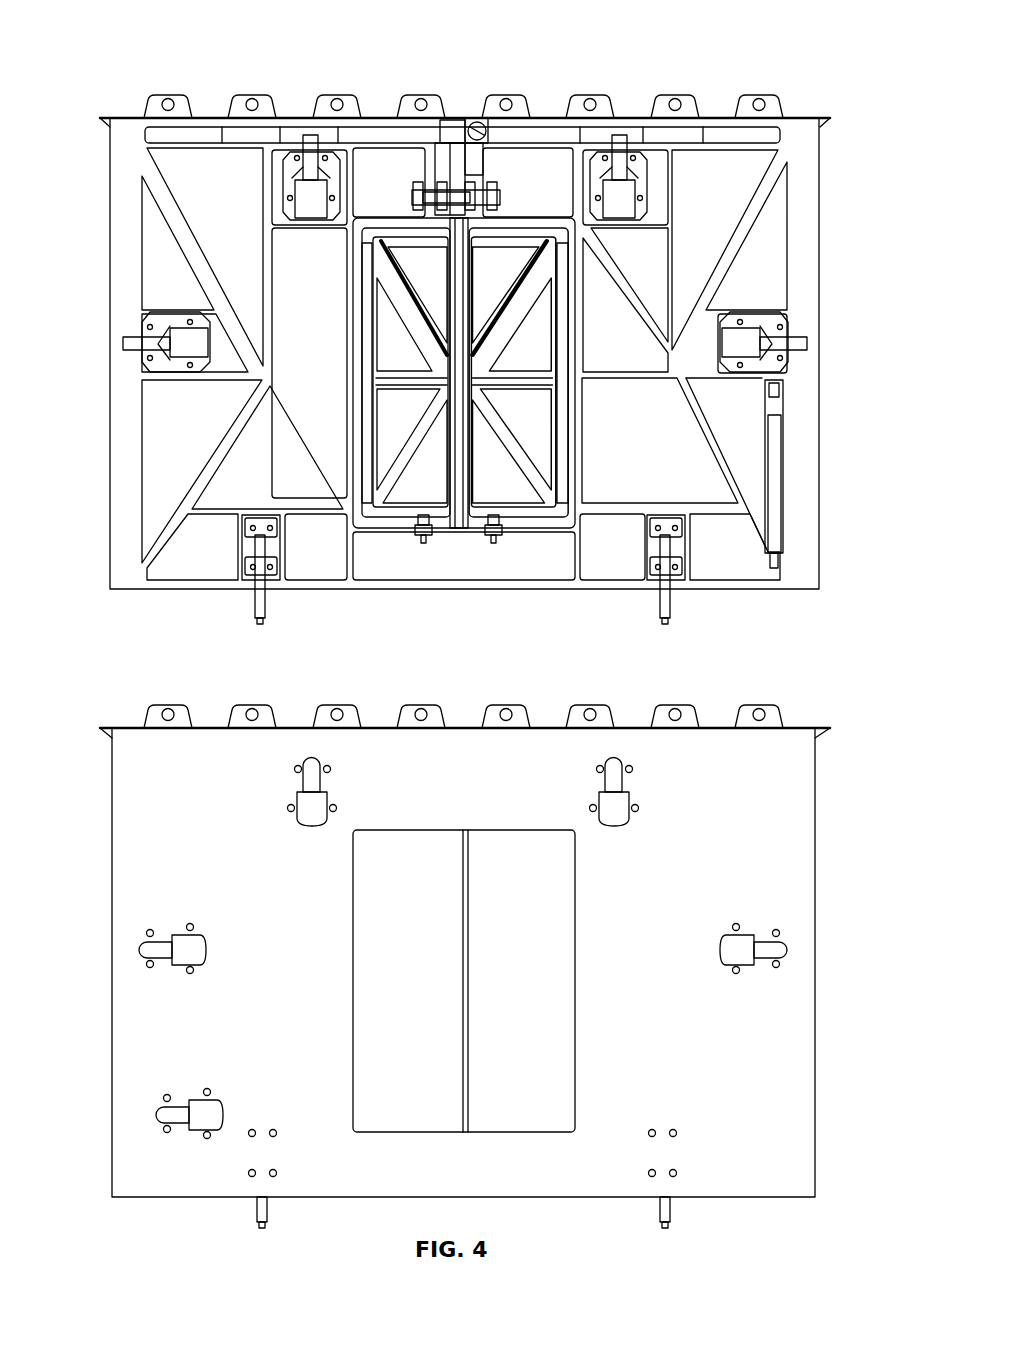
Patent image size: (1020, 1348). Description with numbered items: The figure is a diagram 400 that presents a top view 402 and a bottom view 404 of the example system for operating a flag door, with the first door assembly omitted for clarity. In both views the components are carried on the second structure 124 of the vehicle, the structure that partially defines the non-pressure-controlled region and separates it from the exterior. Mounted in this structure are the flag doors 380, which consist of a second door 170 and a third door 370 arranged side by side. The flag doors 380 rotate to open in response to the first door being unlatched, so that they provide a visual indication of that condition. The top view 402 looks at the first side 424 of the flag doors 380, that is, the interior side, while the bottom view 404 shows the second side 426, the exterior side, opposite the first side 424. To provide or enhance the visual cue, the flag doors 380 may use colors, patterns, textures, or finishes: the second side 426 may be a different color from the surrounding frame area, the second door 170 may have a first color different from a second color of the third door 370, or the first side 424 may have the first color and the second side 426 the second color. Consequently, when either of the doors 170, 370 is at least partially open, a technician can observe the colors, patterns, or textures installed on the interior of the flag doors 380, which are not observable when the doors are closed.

The diagram 400 is at (463, 615).
The top view 402 is at (400, 78).
The bottom view 404 is at (421, 668).
The second structure 124 is at (805, 180).
The second door 170 is at (405, 340).
The third door 370 is at (528, 337).
The first side 424 is at (527, 417).
The flag doors 380 is at (459, 540).
The second side 426 is at (545, 915).